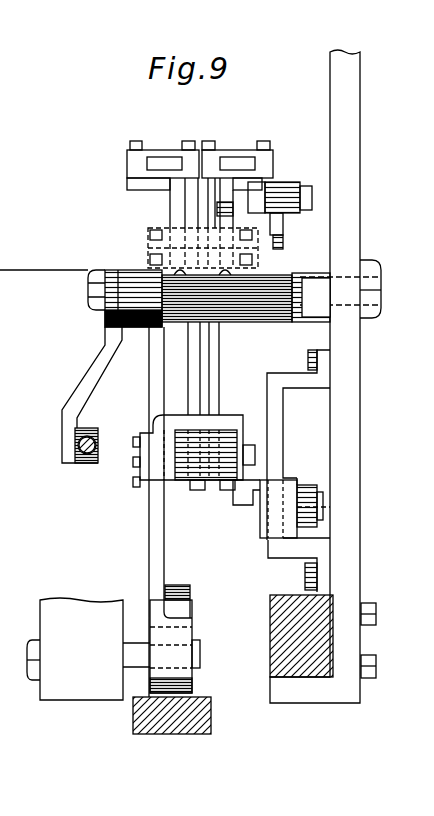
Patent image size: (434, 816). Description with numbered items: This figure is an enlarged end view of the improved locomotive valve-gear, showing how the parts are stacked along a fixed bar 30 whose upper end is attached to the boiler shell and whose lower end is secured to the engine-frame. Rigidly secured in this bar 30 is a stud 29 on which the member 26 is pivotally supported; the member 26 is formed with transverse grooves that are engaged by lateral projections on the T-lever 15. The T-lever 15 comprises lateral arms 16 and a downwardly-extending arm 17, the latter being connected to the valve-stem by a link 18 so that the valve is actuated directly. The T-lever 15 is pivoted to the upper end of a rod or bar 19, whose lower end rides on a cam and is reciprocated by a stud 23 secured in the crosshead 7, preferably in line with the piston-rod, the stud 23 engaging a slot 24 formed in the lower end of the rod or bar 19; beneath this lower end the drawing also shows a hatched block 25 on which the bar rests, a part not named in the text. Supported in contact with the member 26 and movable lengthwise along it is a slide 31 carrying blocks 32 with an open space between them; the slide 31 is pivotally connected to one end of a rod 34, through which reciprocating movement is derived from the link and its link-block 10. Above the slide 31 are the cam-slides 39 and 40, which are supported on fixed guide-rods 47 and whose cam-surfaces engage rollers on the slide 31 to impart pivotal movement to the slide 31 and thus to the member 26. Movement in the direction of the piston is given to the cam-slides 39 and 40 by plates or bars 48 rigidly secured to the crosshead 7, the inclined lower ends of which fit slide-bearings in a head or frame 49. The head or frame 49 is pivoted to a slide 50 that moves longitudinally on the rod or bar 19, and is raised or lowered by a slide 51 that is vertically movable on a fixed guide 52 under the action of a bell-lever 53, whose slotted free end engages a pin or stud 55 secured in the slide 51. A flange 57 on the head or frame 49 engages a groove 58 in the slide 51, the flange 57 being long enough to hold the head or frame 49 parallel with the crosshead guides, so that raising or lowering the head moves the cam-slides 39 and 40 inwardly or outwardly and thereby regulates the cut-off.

The crosshead 7 is at (88, 649).
The link-block 10 is at (361, 252).
The T-lever 15 is at (108, 272).
The lateral arms 16 is at (90, 305).
The downwardly-extending arm 17 is at (75, 386).
The link 18 is at (77, 452).
The rod or bar 19 is at (149, 552).
The stud 23 is at (200, 653).
The slot 24 is at (188, 628).
The block 25 is at (211, 718).
The member 26 is at (237, 318).
The stud 29 is at (312, 270).
The bar 30 is at (362, 178).
The slide 31 is at (284, 232).
The blocks 32 is at (203, 248).
The rod 34 is at (287, 184).
The cam-slide 39 is at (165, 207).
The cam-slide 40 is at (227, 192).
The guide-rods 47 is at (237, 160).
The plates or bars 48 is at (210, 397).
The head or frame 49 is at (206, 486).
The slide 50 is at (145, 476).
The slide 51 is at (295, 480).
The fixed guide 52 is at (283, 422).
The bell-lever 53 is at (305, 492).
The pin or stud 55 is at (323, 510).
The flange 57 is at (295, 509).
The groove 58 is at (245, 507).